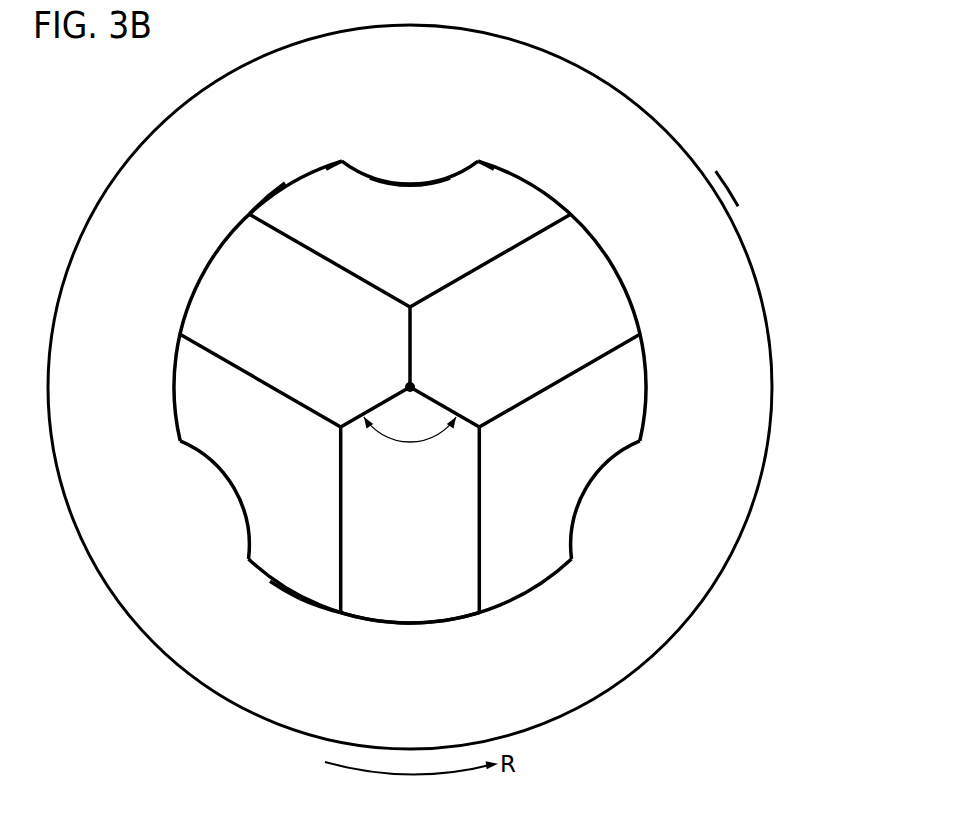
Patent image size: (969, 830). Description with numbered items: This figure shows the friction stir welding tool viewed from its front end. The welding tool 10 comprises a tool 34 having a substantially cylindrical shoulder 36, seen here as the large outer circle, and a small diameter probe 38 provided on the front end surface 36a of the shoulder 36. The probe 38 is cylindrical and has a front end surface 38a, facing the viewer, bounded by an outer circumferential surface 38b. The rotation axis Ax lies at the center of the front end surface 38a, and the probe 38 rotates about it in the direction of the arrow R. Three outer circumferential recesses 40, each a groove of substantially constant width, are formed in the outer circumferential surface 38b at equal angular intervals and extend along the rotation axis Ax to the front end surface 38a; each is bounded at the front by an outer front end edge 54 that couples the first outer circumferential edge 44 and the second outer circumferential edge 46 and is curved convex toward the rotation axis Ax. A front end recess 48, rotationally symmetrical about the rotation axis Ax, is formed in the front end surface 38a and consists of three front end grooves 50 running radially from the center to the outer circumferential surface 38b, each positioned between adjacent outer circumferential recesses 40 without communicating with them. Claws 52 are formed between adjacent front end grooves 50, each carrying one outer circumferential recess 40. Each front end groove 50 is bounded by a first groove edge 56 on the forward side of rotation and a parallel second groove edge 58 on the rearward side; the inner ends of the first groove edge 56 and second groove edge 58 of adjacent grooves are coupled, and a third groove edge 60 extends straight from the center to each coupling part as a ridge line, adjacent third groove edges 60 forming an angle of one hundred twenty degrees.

The welding tool 10 is at (685, 82).
The tool 34 is at (722, 82).
The shoulder 36 is at (700, 167).
The front end surface of the shoulder 36a is at (697, 205).
The probe 38 is at (542, 182).
The front end surface of the probe 38a is at (290, 575).
The outer circumferential surface of the probe 38b is at (320, 608).
The outer circumferential recess 40 is at (414, 170).
The first outer circumferential edge 44 is at (341, 160).
The second outer circumferential edge 46 is at (480, 160).
The front end recess 48 is at (431, 607).
The front end groove 50 is at (377, 603).
The claw 52 is at (293, 202).
The outer front end edge 54 is at (378, 183).
The first groove edge 56 is at (200, 343).
The second groove edge 58 is at (263, 226).
The third groove edge 60 is at (443, 404).
The rotation axis Ax is at (393, 384).